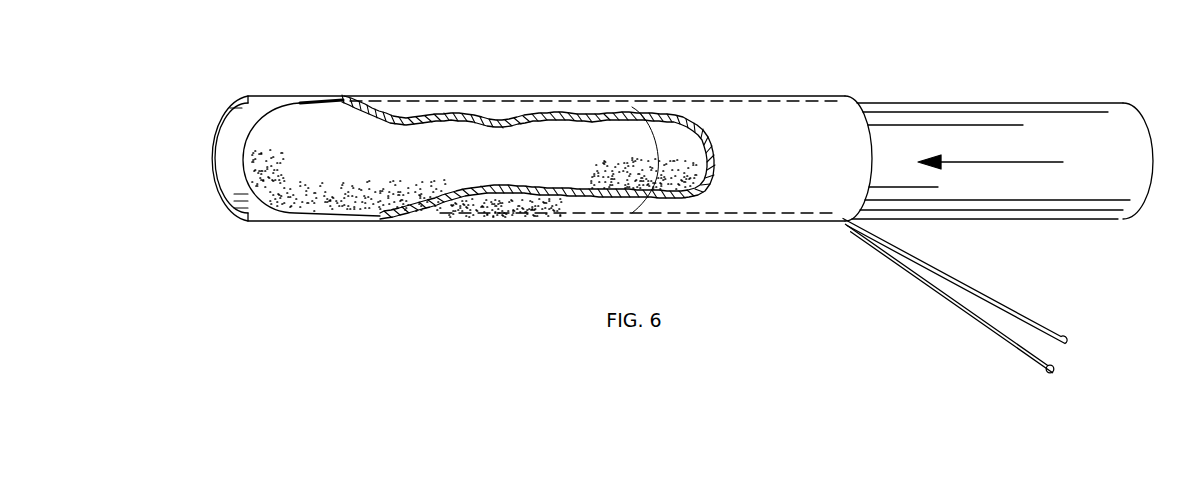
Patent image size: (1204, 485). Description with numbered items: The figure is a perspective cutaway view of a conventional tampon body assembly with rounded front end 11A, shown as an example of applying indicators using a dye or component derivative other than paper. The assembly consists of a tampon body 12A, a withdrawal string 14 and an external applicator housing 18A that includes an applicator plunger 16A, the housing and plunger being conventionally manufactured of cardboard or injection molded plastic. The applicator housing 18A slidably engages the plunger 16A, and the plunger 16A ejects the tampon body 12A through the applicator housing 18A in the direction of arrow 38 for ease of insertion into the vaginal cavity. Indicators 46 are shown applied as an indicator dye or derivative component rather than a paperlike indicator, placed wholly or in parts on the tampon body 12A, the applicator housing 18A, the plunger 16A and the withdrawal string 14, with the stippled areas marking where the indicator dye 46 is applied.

The tampon body assembly with rounded front end 11A is at (253, 135).
The tampon body 12A is at (385, 160).
The indicators 46 is at (337, 193).
The external applicator housing 18A is at (800, 130).
The applicator plunger 16A is at (985, 103).
The arrow 38 is at (992, 163).
The withdrawal string 14 is at (948, 272).